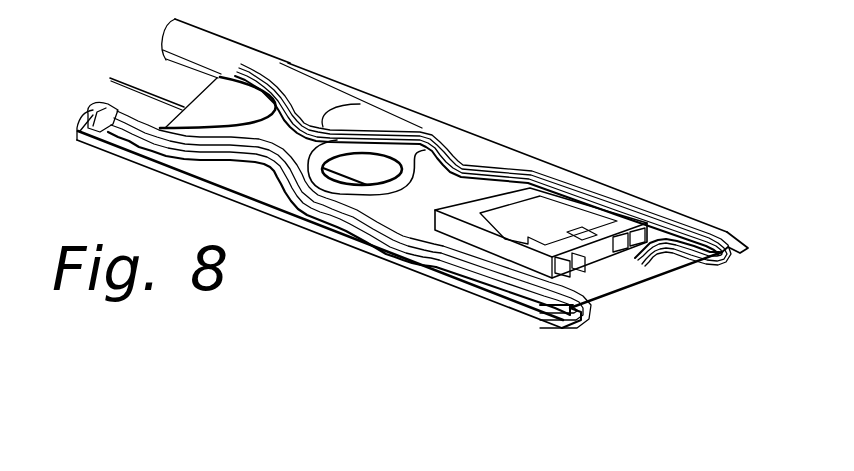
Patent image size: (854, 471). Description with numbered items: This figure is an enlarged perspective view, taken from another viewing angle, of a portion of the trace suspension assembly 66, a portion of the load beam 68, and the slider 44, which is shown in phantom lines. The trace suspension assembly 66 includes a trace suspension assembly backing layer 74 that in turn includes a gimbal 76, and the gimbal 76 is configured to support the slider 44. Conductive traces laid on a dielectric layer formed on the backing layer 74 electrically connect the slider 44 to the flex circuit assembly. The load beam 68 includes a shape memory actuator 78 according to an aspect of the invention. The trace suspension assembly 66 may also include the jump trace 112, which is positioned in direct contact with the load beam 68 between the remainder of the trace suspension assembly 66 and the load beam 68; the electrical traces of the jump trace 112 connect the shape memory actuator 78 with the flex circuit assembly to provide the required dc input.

The slider 44 is at (570, 220).
The trace suspension assembly 66 is at (487, 103).
The load beam 68 is at (161, 175).
The trace suspension assembly backing layer 74 is at (344, 228).
The gimbal 76 is at (440, 254).
The shape memory actuator 78 is at (113, 78).
The jump trace 112 is at (90, 108).